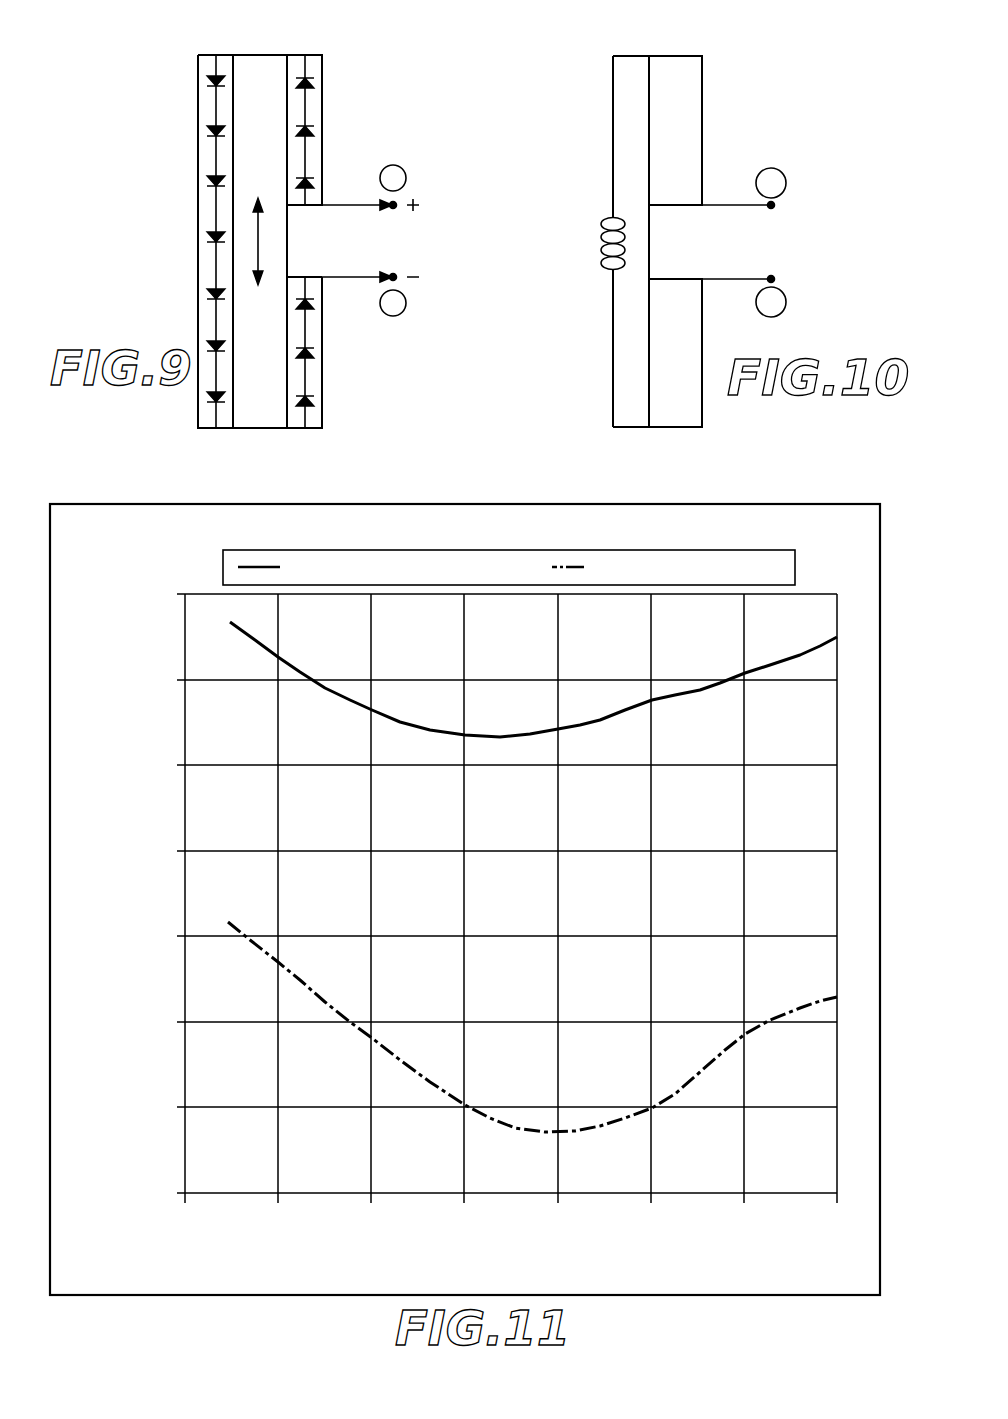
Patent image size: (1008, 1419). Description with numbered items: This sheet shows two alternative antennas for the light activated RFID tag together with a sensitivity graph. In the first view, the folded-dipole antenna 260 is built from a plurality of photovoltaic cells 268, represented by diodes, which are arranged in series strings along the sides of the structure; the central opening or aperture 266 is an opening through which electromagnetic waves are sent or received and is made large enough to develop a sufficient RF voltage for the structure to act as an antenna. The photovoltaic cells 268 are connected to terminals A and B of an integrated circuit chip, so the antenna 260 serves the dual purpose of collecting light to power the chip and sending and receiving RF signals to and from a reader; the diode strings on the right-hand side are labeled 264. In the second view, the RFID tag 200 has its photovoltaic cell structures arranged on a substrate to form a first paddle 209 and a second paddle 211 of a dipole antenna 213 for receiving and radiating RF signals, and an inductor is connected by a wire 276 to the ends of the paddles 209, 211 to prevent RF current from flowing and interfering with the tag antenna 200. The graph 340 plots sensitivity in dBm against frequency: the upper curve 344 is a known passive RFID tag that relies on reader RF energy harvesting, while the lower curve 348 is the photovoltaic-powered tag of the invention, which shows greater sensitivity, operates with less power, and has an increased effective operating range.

In FIG. 9, the folded-dipole antenna 260 is at (176, 117).
In FIG. 9, the solar cell diode strings on second antenna element 264 is at (290, 210).
In FIG. 9, the aperture 266 is at (310, 241).
In FIG. 9, the photovoltaic cells 268 is at (213, 183).
In FIG. 10, the RFID tag 200 is at (597, 141).
In FIG. 10, the first paddle 209 is at (667, 56).
In FIG. 10, the second paddle 211 is at (672, 427).
In FIG. 10, the dipole antenna 213 is at (765, 117).
In FIG. 10, the wire 276 is at (613, 405).
In FIG. 11, the graph 340 is at (538, 912).
In FIG. 11, the upper curve 344 is at (595, 720).
In FIG. 11, the lower curve 348 is at (578, 1129).